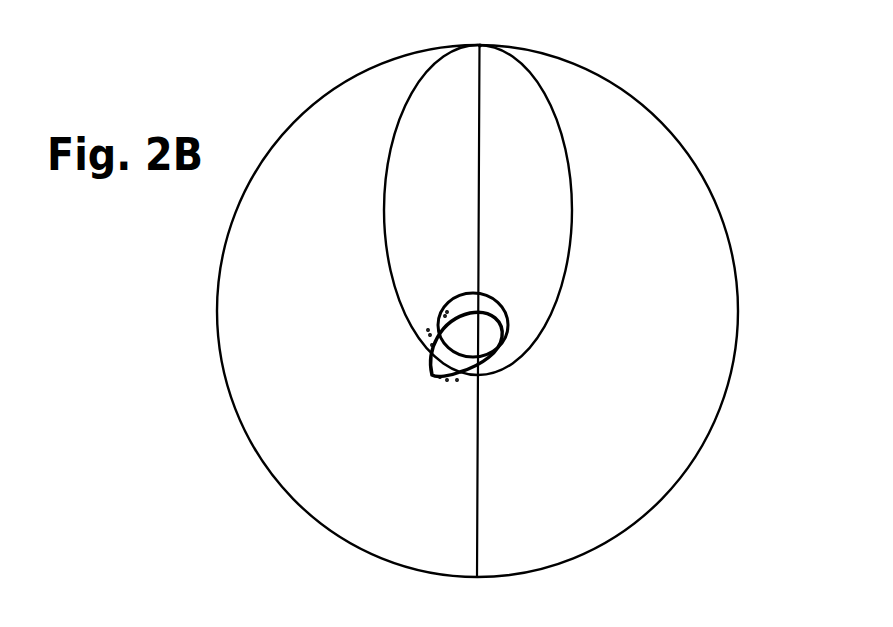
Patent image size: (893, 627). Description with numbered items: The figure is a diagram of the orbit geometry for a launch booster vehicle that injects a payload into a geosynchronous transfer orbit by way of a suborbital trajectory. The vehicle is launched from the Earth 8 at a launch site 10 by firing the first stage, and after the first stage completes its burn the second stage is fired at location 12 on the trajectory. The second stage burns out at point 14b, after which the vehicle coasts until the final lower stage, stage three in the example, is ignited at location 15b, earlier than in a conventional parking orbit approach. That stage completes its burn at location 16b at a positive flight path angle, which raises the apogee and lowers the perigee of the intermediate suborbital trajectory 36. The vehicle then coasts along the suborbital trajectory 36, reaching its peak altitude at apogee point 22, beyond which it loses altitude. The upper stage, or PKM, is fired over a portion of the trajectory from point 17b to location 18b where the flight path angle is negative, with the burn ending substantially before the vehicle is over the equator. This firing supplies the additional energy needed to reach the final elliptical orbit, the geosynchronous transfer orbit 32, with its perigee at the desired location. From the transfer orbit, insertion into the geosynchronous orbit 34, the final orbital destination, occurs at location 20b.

The Earth 8 is at (503, 332).
The launch site 10 is at (447, 312).
The second stage firing location 12 is at (445, 316).
The second stage burnout point 14b is at (428, 330).
The final lower stage firing location 15b is at (430, 335).
The final lower stage burnout location 16b is at (432, 345).
The upper stage ignition point 17b is at (447, 380).
The upper stage burnout location 18b is at (457, 380).
The geosynchronous orbit insertion location 20b is at (482, 45).
The apogee point 22 is at (440, 377).
The geosynchronous transfer orbit 32 is at (572, 190).
The geosynchronous orbit 34 is at (283, 134).
The intermediate suborbital trajectory 36 is at (432, 362).